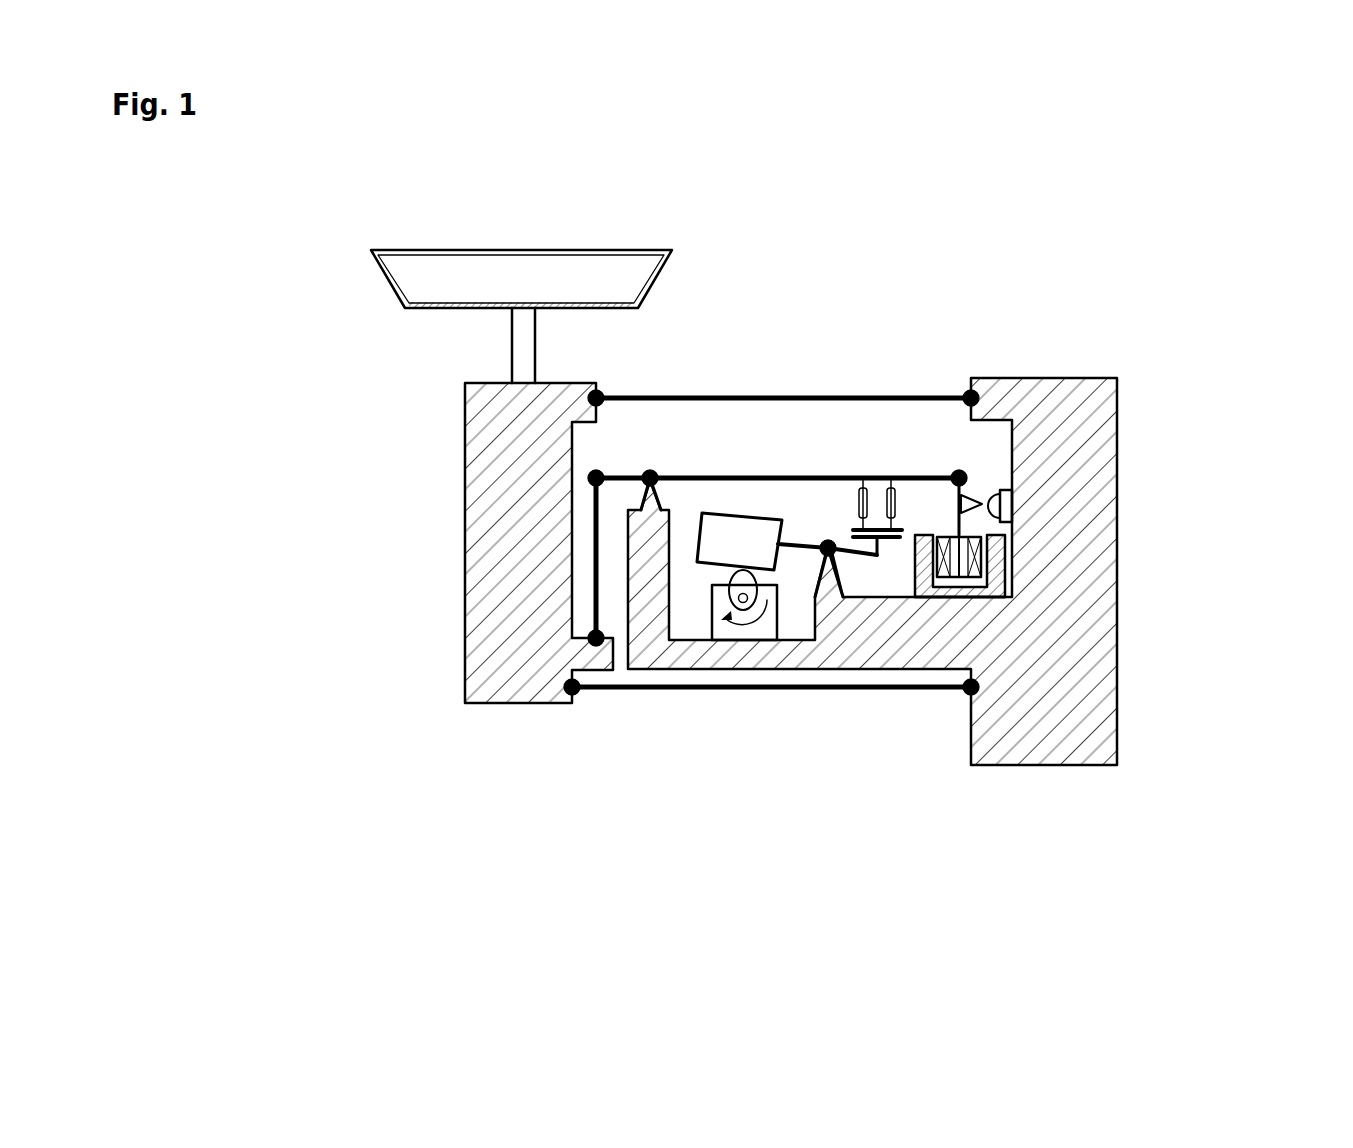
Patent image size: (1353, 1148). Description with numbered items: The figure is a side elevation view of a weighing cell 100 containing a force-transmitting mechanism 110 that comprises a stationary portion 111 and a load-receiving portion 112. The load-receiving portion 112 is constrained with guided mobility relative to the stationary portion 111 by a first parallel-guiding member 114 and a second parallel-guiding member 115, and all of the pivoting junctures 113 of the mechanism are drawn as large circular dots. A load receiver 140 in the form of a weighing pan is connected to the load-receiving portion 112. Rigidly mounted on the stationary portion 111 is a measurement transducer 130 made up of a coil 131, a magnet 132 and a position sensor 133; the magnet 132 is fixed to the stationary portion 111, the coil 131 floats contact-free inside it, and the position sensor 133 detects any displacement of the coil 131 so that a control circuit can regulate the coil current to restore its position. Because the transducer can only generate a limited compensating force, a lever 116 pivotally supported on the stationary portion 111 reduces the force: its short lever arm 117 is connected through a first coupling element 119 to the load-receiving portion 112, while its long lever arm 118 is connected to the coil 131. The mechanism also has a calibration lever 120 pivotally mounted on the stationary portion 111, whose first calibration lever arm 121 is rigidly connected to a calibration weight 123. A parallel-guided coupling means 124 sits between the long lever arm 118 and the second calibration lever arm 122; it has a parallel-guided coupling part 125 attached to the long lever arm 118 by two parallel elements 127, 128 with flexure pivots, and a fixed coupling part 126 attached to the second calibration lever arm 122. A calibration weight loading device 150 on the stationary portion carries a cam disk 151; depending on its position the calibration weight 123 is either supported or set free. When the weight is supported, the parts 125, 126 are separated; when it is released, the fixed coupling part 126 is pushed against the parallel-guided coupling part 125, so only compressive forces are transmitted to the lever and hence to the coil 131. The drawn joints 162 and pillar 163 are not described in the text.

The weighing cell 100 is at (1138, 298).
The force-transmitting mechanism 110 is at (443, 636).
The stationary portion 111 is at (1072, 690).
The load-receiving portion 112 is at (515, 490).
The pivoting junctures 113 is at (600, 390).
The first parallel-guiding member 114 is at (822, 398).
The second parallel-guiding member 115 is at (660, 686).
The lever 116 is at (828, 528).
The short lever arm 117 is at (630, 472).
The long lever arm 118 is at (748, 478).
The first coupling element 119 is at (594, 562).
The calibration lever 120 is at (850, 462).
The first calibration lever arm 121 is at (793, 548).
The second calibration lever arm 122 is at (855, 560).
The calibration weight 123 is at (738, 540).
The parallel-guided coupling means 124 is at (913, 508).
The parallel-guided coupling part 125 is at (903, 530).
The fixed coupling part 126 is at (965, 556).
The first parallel element 127 is at (893, 503).
The second parallel element 128 is at (863, 507).
The measurement transducer 130 is at (964, 633).
The coil 131 is at (995, 578).
The magnet 132 is at (1002, 592).
The position sensor 133 is at (1000, 505).
The load receiver 140 is at (520, 283).
The calibration weight loading device 150 is at (750, 630).
The cam disk 151 is at (740, 590).
The joint 162 is at (652, 476).
The support pillar 163 is at (828, 558).